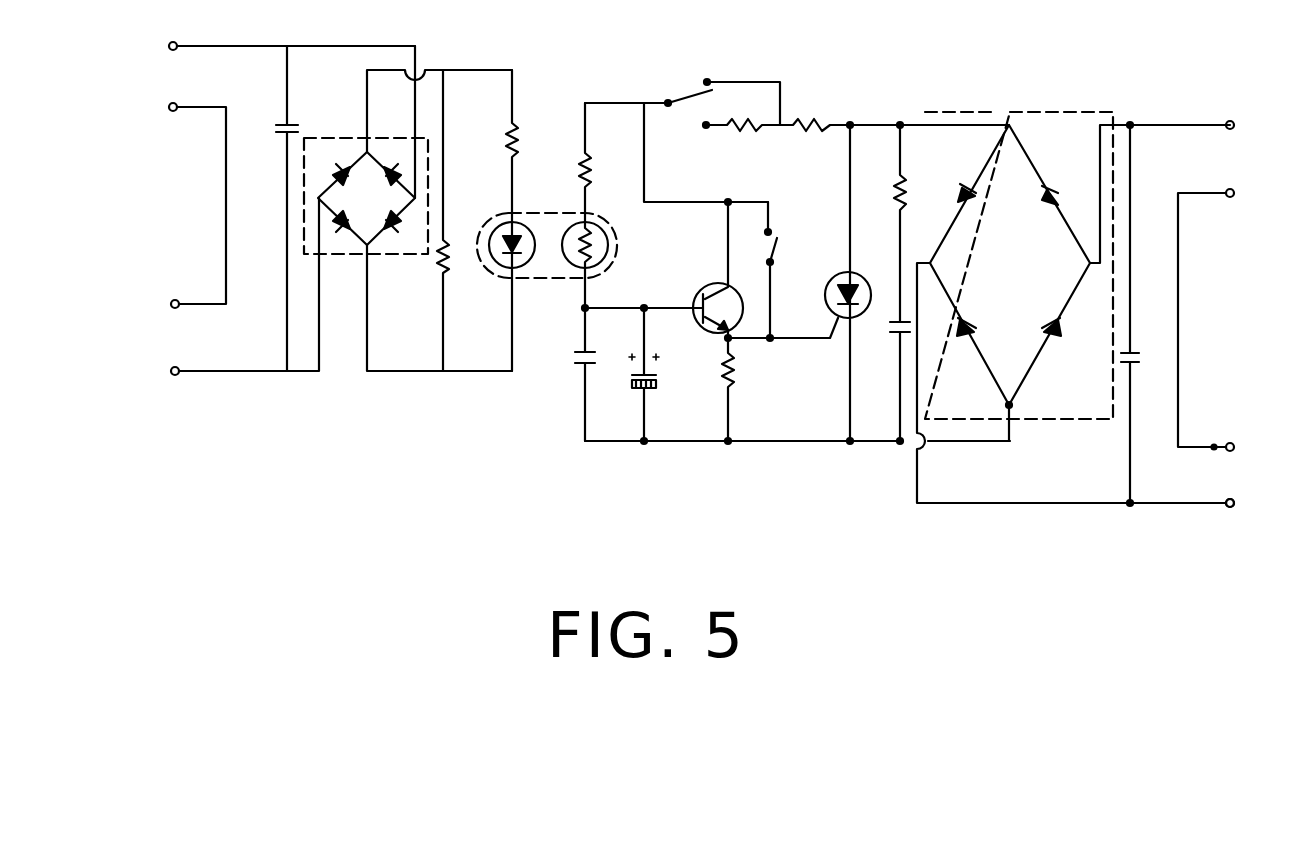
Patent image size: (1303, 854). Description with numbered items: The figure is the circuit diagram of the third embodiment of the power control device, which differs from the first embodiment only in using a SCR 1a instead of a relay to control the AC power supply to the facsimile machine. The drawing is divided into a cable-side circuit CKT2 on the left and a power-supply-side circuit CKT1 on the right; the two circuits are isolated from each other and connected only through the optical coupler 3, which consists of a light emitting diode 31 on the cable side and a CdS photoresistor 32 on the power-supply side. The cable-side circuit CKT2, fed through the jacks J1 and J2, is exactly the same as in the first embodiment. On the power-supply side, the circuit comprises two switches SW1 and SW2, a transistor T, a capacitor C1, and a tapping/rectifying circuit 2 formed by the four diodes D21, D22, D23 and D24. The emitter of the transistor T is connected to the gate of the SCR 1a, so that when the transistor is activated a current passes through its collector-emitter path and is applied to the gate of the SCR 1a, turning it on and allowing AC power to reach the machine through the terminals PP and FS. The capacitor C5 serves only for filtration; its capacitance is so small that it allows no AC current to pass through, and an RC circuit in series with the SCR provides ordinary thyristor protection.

The cable-side circuit CKT2 is at (522, 398).
The power-supply-side circuit CKT1 is at (1238, 530).
The first connector jack J1 is at (167, 44).
The second connector jack J2 is at (169, 302).
The optical coupler 3 is at (518, 213).
The LED 31 is at (497, 278).
The CdS photoresistor 32 is at (566, 263).
The switch SW2 is at (668, 101).
The switch SW1 is at (777, 240).
The transistor T is at (710, 284).
The capacitor C1 is at (660, 382).
The SCR 1a is at (838, 277).
The tapping/rectifying circuit 2 is at (1002, 112).
The diode D21 is at (1051, 184).
The diode D22 is at (977, 205).
The diode D23 is at (972, 315).
The diode D24 is at (1050, 314).
The capacitor C5 is at (1136, 353).
The power plug terminals PP is at (1237, 125).
The foot switch terminals FS is at (1237, 447).